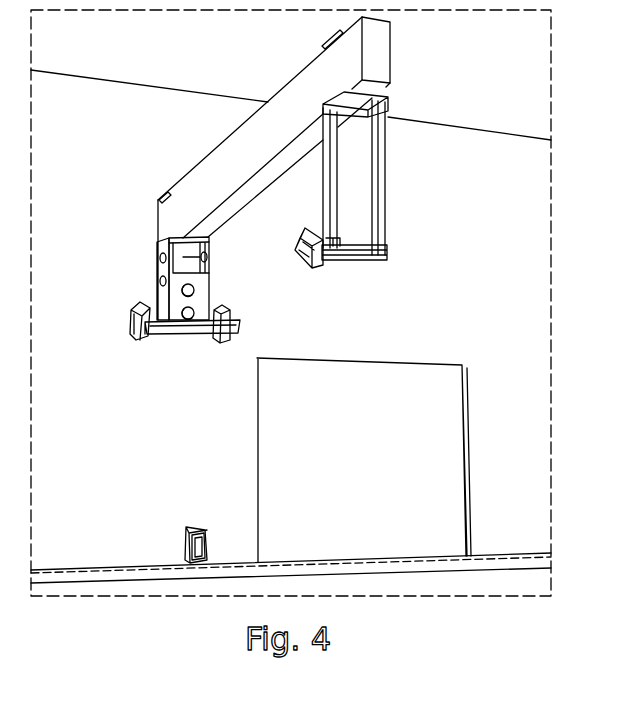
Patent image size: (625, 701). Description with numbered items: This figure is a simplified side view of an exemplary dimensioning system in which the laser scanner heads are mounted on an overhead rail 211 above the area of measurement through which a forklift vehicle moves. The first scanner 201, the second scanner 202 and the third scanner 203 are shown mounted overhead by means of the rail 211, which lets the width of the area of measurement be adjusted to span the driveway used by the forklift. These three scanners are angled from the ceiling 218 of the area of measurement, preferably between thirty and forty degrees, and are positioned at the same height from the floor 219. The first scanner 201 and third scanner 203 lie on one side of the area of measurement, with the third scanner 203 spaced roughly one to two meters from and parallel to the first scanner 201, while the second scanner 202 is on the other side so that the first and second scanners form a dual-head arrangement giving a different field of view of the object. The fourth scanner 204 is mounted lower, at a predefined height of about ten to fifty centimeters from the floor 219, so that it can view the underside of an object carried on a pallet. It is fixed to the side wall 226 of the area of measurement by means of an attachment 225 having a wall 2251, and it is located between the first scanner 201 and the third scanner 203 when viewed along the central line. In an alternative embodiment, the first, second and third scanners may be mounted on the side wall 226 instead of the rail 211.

The rail 211 is at (227, 167).
The ceiling 218 is at (442, 62).
The side wall 226 is at (440, 201).
The second scanner 202 is at (322, 259).
The third scanner 203 is at (231, 340).
The first scanner 201 is at (142, 337).
The fourth scanner 204 is at (203, 527).
The attachment 225 is at (187, 538).
The wall 2251 is at (187, 545).
The floor 219 is at (366, 584).